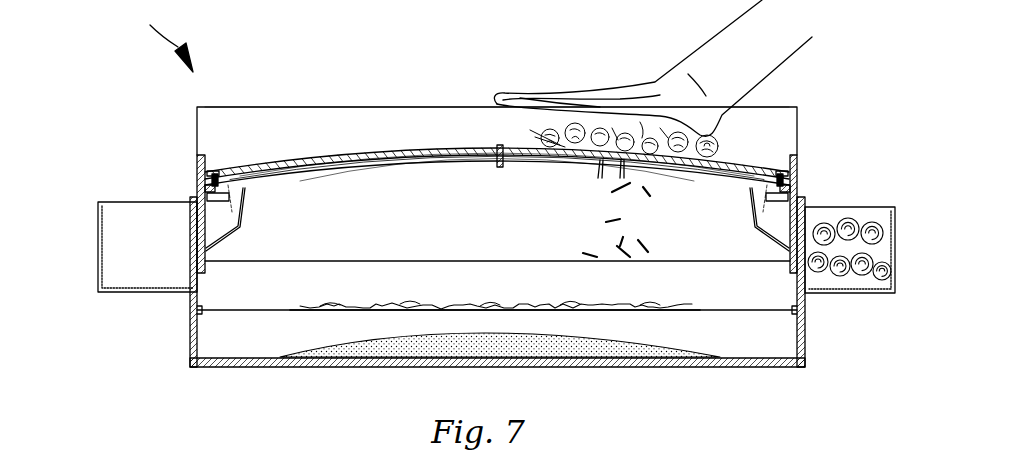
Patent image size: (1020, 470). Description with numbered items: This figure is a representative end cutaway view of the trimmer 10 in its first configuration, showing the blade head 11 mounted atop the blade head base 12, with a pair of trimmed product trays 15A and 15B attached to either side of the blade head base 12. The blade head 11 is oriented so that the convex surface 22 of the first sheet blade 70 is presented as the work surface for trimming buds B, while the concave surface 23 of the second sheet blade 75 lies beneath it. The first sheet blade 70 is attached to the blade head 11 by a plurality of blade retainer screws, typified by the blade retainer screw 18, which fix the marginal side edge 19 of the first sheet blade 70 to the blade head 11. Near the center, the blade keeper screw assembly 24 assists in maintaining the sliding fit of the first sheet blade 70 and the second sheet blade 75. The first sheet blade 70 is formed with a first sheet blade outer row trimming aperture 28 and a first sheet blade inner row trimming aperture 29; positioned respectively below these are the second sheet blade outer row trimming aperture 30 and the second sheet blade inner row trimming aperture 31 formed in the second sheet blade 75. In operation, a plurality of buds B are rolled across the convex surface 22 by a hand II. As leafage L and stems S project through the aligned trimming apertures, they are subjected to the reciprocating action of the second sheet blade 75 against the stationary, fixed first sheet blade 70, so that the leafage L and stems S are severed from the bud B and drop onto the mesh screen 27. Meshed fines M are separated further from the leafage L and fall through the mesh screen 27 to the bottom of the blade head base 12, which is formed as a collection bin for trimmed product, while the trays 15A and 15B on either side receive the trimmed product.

The trimmer 10 is at (160, 44).
The blade head 11 is at (325, 122).
The blade head base 12 is at (197, 338).
The trimmed product tray 15A is at (115, 210).
The trimmed product tray 15B is at (836, 295).
The blade retainer screw 18 is at (214, 172).
The marginal side edge 19 is at (205, 178).
The convex surface 22 is at (497, 149).
The concave surface 23 is at (318, 173).
The blade keeper screw assembly 24 is at (498, 145).
The mesh screen 27 is at (290, 310).
The first sheet blade outer row trimming aperture 28 is at (282, 163).
The first sheet blade inner row trimming aperture 29 is at (343, 157).
The second sheet blade outer row trimming aperture 30 is at (262, 180).
The second sheet blade inner row trimming aperture 31 is at (357, 167).
The first sheet blade 70 is at (317, 163).
The second sheet blade 75 is at (447, 163).
The bud B is at (720, 140).
The stems S is at (712, 183).
The leafage L is at (680, 302).
The meshed fines M is at (690, 340).
The hand II is at (628, 108).